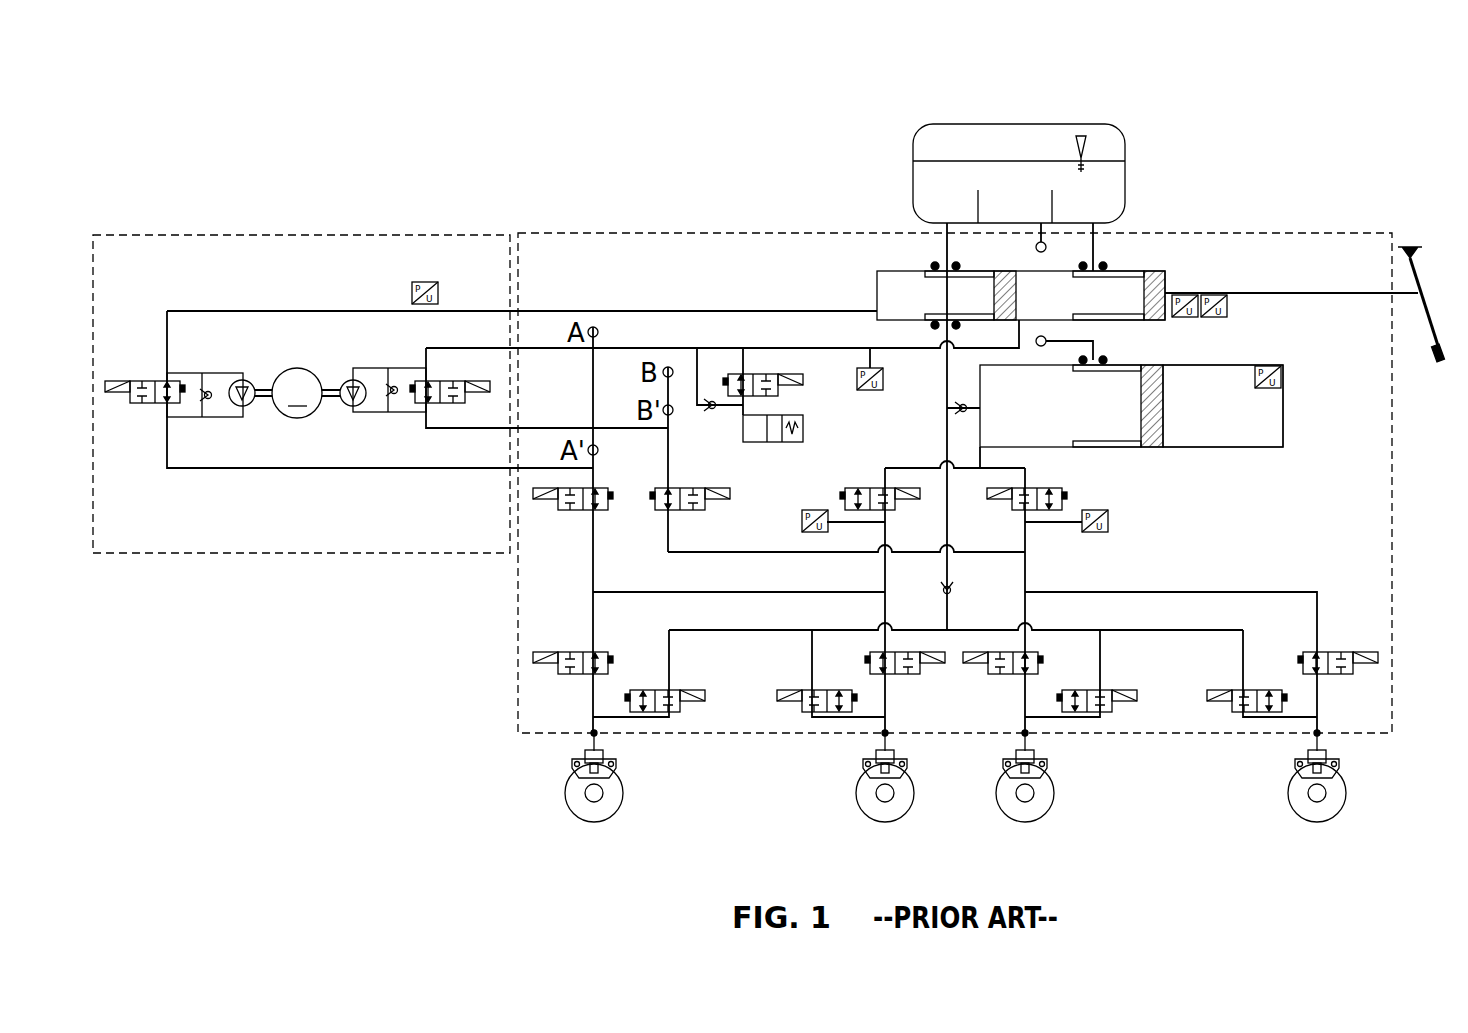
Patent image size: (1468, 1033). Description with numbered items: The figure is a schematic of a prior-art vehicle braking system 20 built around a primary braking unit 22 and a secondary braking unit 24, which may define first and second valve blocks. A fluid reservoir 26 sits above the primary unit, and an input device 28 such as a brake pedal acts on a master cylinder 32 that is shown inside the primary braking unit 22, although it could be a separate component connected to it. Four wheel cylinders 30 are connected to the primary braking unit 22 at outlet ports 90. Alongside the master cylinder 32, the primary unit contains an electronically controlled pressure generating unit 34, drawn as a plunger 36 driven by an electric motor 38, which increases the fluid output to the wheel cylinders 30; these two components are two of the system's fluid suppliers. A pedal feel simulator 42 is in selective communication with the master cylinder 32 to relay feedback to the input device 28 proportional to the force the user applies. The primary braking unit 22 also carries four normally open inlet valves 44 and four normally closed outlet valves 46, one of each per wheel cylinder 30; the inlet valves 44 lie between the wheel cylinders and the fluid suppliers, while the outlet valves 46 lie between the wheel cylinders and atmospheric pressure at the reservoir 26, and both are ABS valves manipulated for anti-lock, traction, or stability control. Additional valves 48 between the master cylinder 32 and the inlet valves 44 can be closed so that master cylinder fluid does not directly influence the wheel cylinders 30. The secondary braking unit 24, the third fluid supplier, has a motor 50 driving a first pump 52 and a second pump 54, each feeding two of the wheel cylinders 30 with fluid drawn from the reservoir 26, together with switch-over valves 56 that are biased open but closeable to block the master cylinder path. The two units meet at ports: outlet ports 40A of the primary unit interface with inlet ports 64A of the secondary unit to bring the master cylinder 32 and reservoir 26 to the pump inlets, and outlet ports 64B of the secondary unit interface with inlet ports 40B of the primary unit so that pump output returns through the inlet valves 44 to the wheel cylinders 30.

The vehicle braking system 20 is at (168, 85).
The primary braking unit 22 is at (676, 233).
The secondary braking unit 24 is at (278, 234).
The fluid reservoir 26 is at (1012, 124).
The input device 28 is at (1438, 366).
The wheel cylinders 30 is at (616, 768).
The master cylinder 32 is at (877, 285).
The electronically controlled pressure generating unit 34 is at (1316, 404).
The plunger 36 is at (1118, 447).
The electric motor 38 is at (1222, 447).
The outlet ports 40A is at (518, 311).
The inlet ports 40B is at (518, 428).
The pedal feel simulator 42 is at (803, 430).
The inlet valves 44 is at (560, 677).
The outlet valves 46 is at (680, 714).
The additional valves 48 is at (568, 512).
The motor 50 is at (300, 368).
The first pump 52 is at (244, 380).
The second pump 54 is at (350, 406).
The switch-over valves 56 is at (142, 403).
The inlet ports 64A is at (510, 311).
The outlet ports 64B is at (510, 430).
The outlet ports 90 is at (594, 733).